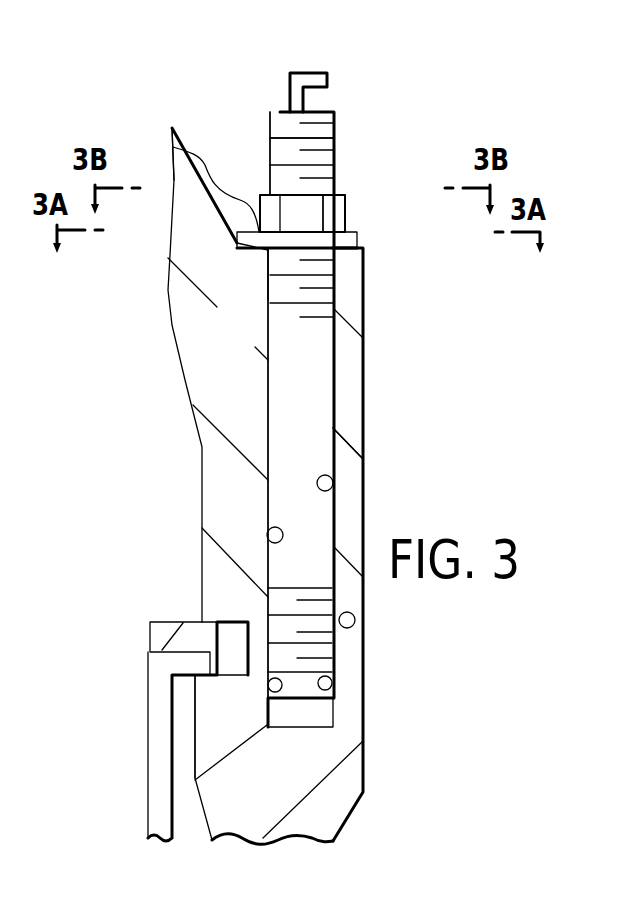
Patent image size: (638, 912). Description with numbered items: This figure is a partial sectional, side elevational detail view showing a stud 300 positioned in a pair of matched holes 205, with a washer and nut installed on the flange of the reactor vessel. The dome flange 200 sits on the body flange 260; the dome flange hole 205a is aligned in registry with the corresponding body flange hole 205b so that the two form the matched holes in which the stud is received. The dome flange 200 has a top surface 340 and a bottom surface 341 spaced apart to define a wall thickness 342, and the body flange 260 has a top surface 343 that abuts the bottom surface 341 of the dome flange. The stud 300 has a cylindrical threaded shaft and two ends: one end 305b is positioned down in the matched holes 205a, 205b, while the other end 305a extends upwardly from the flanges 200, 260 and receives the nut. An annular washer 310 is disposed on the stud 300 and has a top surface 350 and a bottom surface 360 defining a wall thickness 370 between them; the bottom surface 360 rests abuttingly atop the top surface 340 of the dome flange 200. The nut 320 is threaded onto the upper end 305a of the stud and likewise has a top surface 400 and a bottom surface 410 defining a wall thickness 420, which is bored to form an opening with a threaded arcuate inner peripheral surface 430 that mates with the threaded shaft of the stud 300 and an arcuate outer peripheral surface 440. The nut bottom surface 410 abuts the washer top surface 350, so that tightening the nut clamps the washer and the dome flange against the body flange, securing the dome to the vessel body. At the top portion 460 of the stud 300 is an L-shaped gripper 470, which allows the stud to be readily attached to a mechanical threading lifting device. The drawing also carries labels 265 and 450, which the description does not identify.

The dome flange 200 is at (367, 392).
The matched holes 205 is at (272, 530).
The dome flange hole 205a is at (318, 494).
The body flange hole 205b is at (333, 678).
The body flange 260 is at (392, 757).
The bracket edge 265 is at (268, 692).
The stud 300 is at (295, 428).
The stud end 305a is at (272, 117).
The stud end 305b is at (297, 700).
The annular washer 310 is at (363, 232).
The nut 320 is at (347, 197).
The top surface 340 is at (228, 226).
The bottom surface 341 is at (265, 613).
The wall thickness 342 is at (227, 358).
The top surface 343 is at (333, 623).
The top surface 350 is at (173, 161).
The bottom surface 360 is at (263, 257).
The wall thickness 370 is at (265, 253).
The top surface 400 is at (273, 190).
The bottom surface 410 is at (343, 217).
The wall thickness 420 is at (451, 193).
The inner peripheral surface 430 is at (333, 195).
The outer peripheral surface 440 is at (260, 227).
The threads 450 is at (322, 297).
The top portion 460 is at (352, 104).
The L-shaped gripper 470 is at (322, 70).